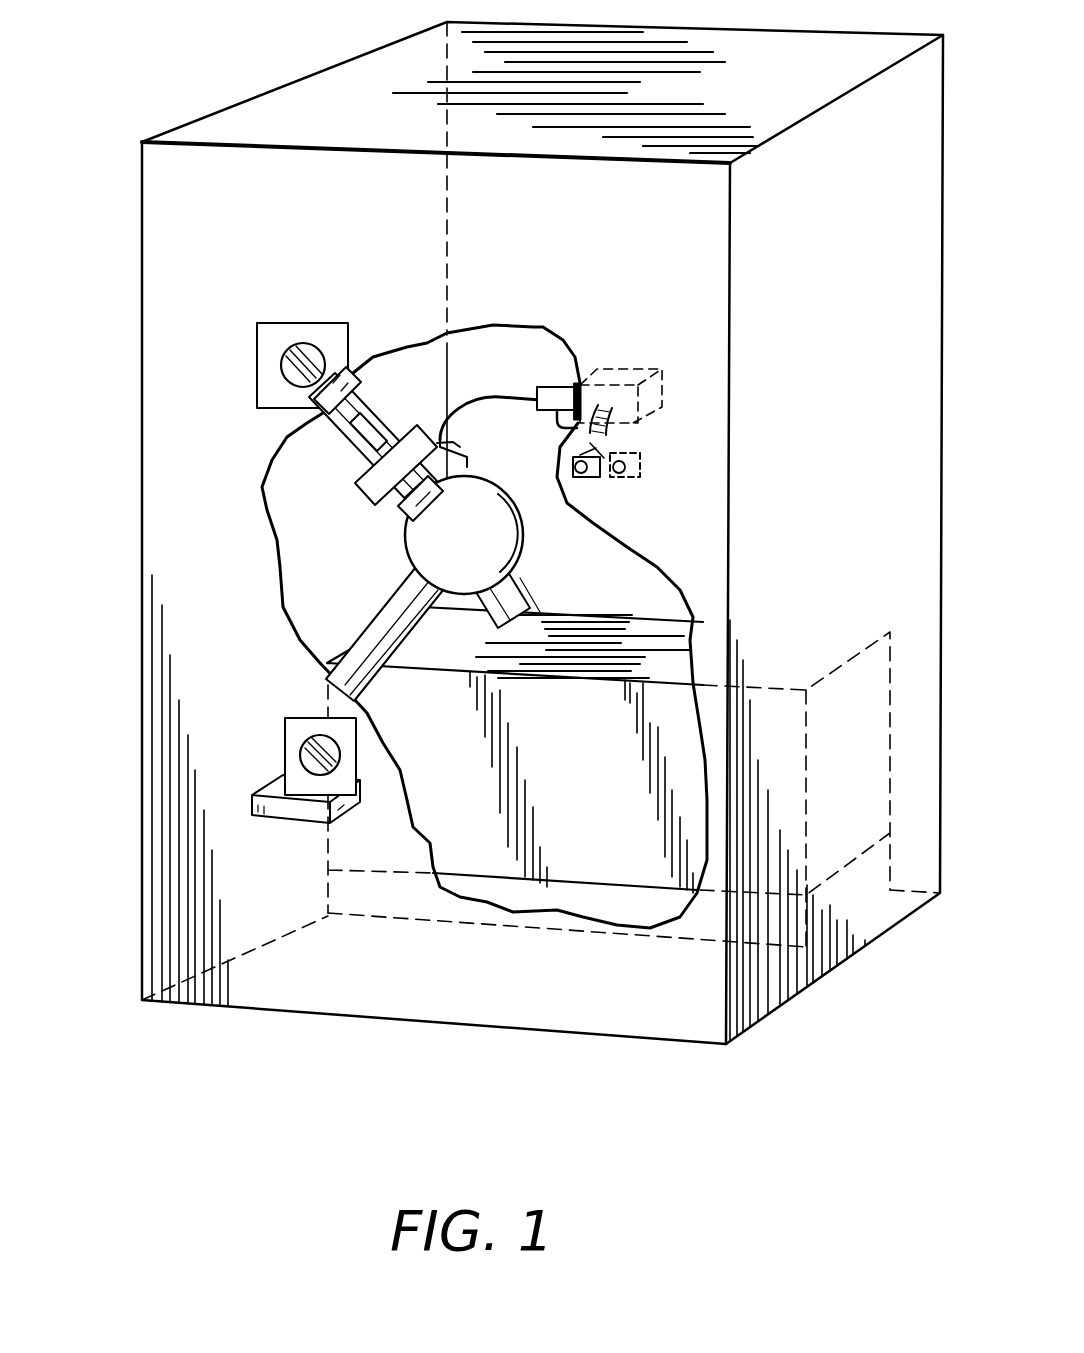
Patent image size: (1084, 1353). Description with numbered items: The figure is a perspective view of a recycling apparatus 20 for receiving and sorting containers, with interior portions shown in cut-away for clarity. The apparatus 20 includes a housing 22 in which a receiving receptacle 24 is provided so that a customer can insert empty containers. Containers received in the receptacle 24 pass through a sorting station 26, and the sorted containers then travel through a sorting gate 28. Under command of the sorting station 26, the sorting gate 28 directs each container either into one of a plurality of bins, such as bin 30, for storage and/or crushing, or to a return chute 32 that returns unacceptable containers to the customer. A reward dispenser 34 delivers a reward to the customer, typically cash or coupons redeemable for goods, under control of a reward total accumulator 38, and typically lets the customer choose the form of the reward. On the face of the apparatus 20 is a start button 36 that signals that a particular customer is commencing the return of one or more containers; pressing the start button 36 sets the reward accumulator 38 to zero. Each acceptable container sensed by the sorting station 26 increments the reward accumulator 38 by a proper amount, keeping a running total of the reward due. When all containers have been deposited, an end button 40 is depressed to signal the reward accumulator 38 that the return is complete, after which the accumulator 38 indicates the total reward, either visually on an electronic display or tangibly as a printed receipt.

The recycling apparatus 20 is at (248, 86).
The housing 22 is at (142, 255).
The receiving receptacle 24 is at (280, 367).
The sorting station 26 is at (418, 440).
The sorting gate 28 is at (405, 545).
The bin 30 is at (622, 628).
The return chute 32 is at (290, 755).
The reward dispenser 34 is at (623, 368).
The start button 36 is at (583, 482).
The reward total accumulator 38 is at (548, 386).
The end button 40 is at (615, 485).